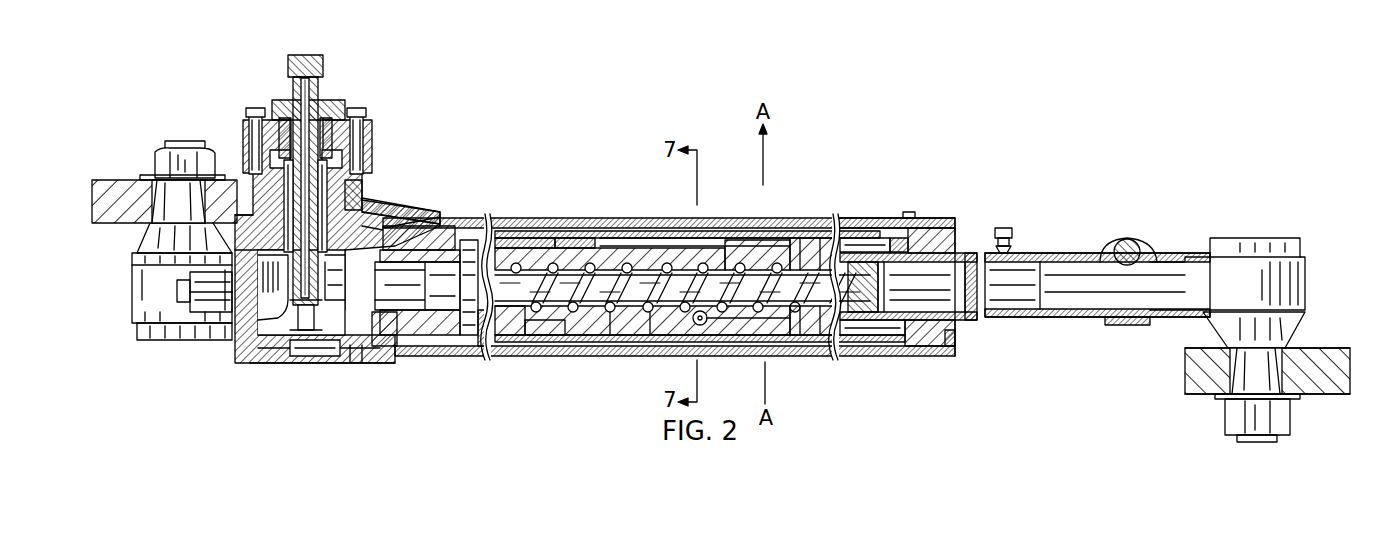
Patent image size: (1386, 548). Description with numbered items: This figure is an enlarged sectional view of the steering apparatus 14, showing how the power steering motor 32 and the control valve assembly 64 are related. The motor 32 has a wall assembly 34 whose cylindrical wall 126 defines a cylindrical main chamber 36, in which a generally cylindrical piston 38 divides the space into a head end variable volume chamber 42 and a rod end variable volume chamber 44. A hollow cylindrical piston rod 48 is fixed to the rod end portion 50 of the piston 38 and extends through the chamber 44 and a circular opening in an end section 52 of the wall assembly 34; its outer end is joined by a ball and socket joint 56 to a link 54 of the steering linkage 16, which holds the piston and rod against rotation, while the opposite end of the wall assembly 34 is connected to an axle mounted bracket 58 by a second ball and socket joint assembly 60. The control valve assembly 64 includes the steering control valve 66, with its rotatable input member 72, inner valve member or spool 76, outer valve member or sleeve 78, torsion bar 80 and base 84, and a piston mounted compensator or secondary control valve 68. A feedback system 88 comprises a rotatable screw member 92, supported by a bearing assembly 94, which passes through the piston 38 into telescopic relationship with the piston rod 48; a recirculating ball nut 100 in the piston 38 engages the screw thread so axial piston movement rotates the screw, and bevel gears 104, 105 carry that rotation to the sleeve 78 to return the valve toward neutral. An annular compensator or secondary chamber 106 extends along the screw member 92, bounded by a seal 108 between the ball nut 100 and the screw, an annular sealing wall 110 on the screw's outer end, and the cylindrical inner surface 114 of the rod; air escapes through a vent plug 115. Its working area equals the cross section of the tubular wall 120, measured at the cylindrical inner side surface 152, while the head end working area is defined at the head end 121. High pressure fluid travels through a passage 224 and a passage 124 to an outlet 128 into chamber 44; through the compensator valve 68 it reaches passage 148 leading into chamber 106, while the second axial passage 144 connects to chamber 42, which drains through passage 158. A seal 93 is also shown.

The steering apparatus 14 is at (628, 118).
The steering linkage 16 is at (1320, 348).
The power steering motor 32 is at (843, 160).
The wall assembly 34 is at (853, 218).
The cylindrical main chamber 36 is at (872, 228).
The piston 38 is at (716, 226).
The head end variable volume chamber 42 is at (506, 342).
The rod end variable volume chamber 44 is at (886, 348).
The hollow cylindrical piston rod 48 is at (1037, 318).
The rod end portion 50 is at (815, 330).
The end section 52 is at (956, 340).
The link 54 is at (1322, 382).
The ball and socket joint 56 is at (1260, 268).
The axle mounted bracket 58 is at (147, 210).
The second ball and socket joint assembly 60 is at (160, 316).
The control valve assembly 64 is at (418, 128).
The steering control valve 66 is at (252, 165).
The compensator or secondary control valve 68 is at (703, 340).
The rotatable input member 72 is at (325, 96).
The inner valve member or spool 76 is at (365, 184).
The outer valve member or sleeve 78 is at (372, 208).
The torsion bar 80 is at (335, 115).
The base 84 is at (292, 304).
The feedback system 88 is at (257, 360).
The rotatable screw member 92 is at (515, 262).
The seal 93 is at (480, 345).
The bearing assembly 94 is at (408, 340).
The recirculating ball nut 100 is at (628, 236).
The bevel gear 104 is at (340, 362).
The bevel gear 105 is at (364, 345).
The compensator or secondary chamber 106 is at (786, 232).
The seal 108 is at (568, 340).
The annular sealing wall 110 is at (862, 340).
The cylindrical inner surface 114 is at (932, 348).
The vent plug 115 is at (1008, 232).
The tubular wall 120 is at (972, 250).
The head end 121 is at (542, 340).
The passage 124 is at (508, 228).
The cylindrical wall 126 is at (560, 225).
The outlet 128 is at (908, 214).
The second axial passage 144 is at (630, 345).
The passage 148 is at (722, 342).
The cylindrical inner side surface 152 is at (822, 338).
The passage 158 is at (455, 226).
The passage 224 is at (426, 215).